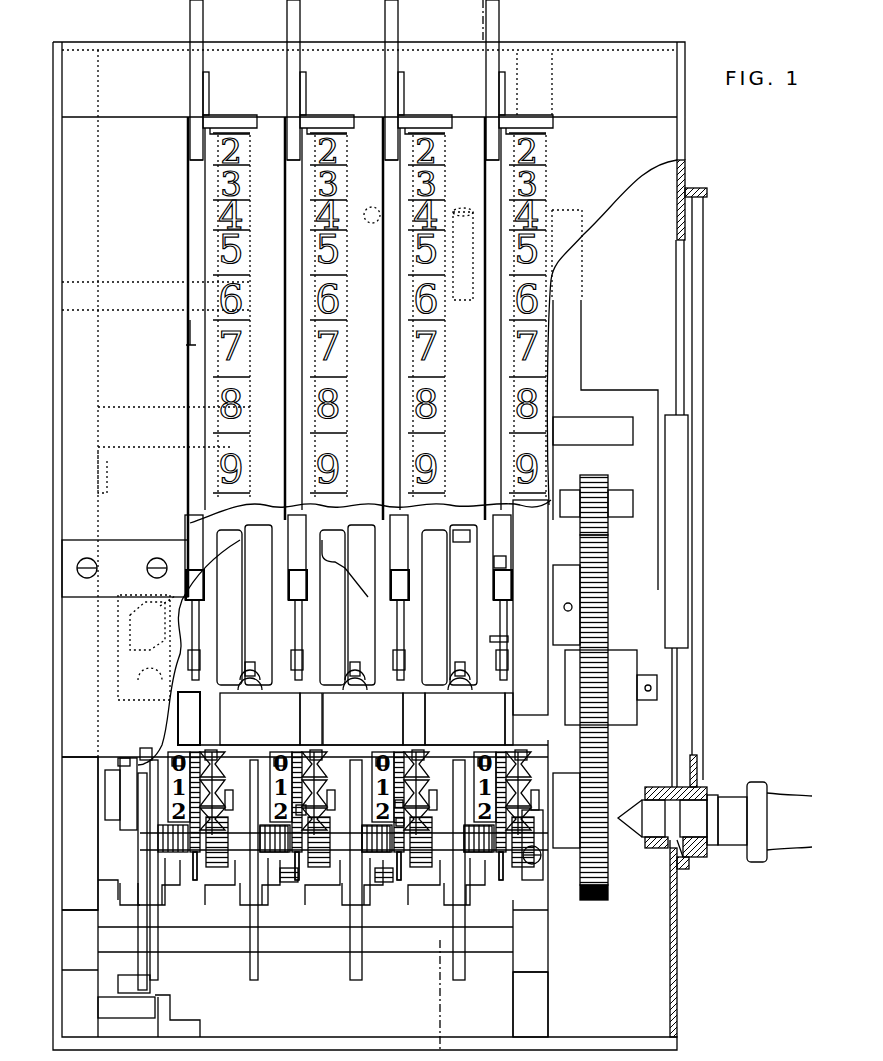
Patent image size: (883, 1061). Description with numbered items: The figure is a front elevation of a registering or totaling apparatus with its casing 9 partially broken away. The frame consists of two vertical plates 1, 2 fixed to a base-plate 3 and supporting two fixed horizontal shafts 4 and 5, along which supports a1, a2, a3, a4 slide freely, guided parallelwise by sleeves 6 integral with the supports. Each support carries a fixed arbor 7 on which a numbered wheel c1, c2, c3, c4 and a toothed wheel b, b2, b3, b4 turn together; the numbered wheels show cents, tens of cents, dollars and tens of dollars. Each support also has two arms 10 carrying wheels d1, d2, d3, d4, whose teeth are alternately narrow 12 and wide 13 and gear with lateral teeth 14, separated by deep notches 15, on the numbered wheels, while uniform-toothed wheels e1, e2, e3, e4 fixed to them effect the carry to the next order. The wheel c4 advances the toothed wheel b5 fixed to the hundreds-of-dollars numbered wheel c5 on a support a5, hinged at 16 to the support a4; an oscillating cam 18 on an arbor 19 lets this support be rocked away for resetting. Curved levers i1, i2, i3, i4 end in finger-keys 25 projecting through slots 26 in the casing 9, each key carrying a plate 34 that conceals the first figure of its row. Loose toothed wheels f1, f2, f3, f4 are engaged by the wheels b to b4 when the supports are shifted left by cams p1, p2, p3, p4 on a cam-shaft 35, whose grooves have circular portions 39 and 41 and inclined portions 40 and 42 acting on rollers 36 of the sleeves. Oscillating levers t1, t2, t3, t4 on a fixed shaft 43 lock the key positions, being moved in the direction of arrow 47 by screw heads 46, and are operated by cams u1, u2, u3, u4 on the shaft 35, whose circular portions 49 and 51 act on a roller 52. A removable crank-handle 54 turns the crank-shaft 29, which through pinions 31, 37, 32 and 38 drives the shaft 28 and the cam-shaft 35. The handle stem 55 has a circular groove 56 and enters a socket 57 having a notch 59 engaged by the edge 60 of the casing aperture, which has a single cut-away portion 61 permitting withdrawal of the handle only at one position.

The vertical plate 1 is at (80, 833).
The vertical plate 2 is at (530, 1004).
The base-plate 3 is at (325, 1022).
The horizontal shaft 4 is at (406, 719).
The horizontal shaft 5 is at (305, 525).
The sleeve 6 is at (341, 718).
The arbor 7 is at (232, 782).
The casing 9 is at (690, 950).
The arm 10 is at (428, 888).
The narrow tooth 12 is at (340, 877).
The wide tooth 13 is at (295, 808).
The lateral tooth 14 is at (402, 796).
The notch 15 is at (404, 816).
The hinge 16 is at (115, 885).
The oscillating cam 18 is at (118, 985).
The arbor 19 is at (126, 1008).
The finger-key 25 is at (204, 20).
The slot 26 is at (348, 357).
The shaft 28 is at (632, 808).
The crank-shaft 29 is at (666, 505).
The pinion 31 is at (592, 476).
The pinion 32 is at (608, 892).
The plate 34 is at (232, 118).
The cam-shaft 35 is at (620, 612).
The roller 36 is at (150, 672).
The pinion 37 is at (608, 757).
The pinion 38 is at (598, 638).
The circular groove portion 39 is at (361, 605).
The inclined groove portion 40 is at (146, 647).
The circular groove portion 41 is at (338, 560).
The inclined groove portion 42 is at (462, 528).
The fixed shaft 43 is at (190, 330).
The screw head 46 is at (372, 220).
The arrow 47 is at (506, 572).
The circular cam portion 49 is at (508, 640).
The circular cam portion 51 is at (503, 556).
The roller 52 is at (205, 530).
The crank-handle 54 is at (759, 822).
The stem 55 is at (653, 818).
The circular groove 56 is at (675, 818).
The socket 57 is at (655, 787).
The notch 59 is at (660, 846).
The edge 60 is at (677, 238).
The cut-away portion 61 is at (672, 865).
The curved lever i4 is at (196, 162).
The curved lever i3 is at (292, 162).
The curved lever i2 is at (391, 160).
The curved lever i1 is at (492, 160).
The oscillating lever t4 is at (252, 372).
The oscillating lever t3 is at (330, 368).
The oscillating lever t2 is at (406, 319).
The oscillating lever t1 is at (503, 319).
The cam p4 is at (125, 568).
The cam p3 is at (229, 607).
The cam p2 is at (332, 607).
The cam p1 is at (434, 607).
The cam u4 is at (200, 663).
The cam u3 is at (303, 663).
The cam u2 is at (405, 663).
The cam u1 is at (508, 663).
The toothed wheel b5 is at (143, 748).
The toothed wheel b4 is at (210, 750).
The toothed wheel b3 is at (318, 750).
The toothed wheel b2 is at (420, 750).
The toothed wheel b is at (521, 750).
The numbered wheel c5 is at (120, 758).
The numbered wheel c4 is at (176, 758).
The numbered wheel c3 is at (277, 748).
The numbered wheel c2 is at (377, 749).
The numbered wheel c1 is at (486, 748).
The toothed wheel e4 is at (122, 850).
The toothed wheel e3 is at (262, 830).
The toothed wheel e2 is at (365, 830).
The toothed wheel e1 is at (466, 830).
The wheel d4 is at (160, 881).
The wheel d3 is at (260, 881).
The wheel d2 is at (361, 881).
The wheel d1 is at (462, 881).
The toothed wheel f4 is at (196, 882).
The toothed wheel f3 is at (297, 882).
The toothed wheel f2 is at (399, 882).
The toothed wheel f1 is at (501, 882).
The support a5 is at (138, 968).
The support a4 is at (160, 968).
The support a3 is at (254, 980).
The support a2 is at (355, 980).
The support a1 is at (458, 980).